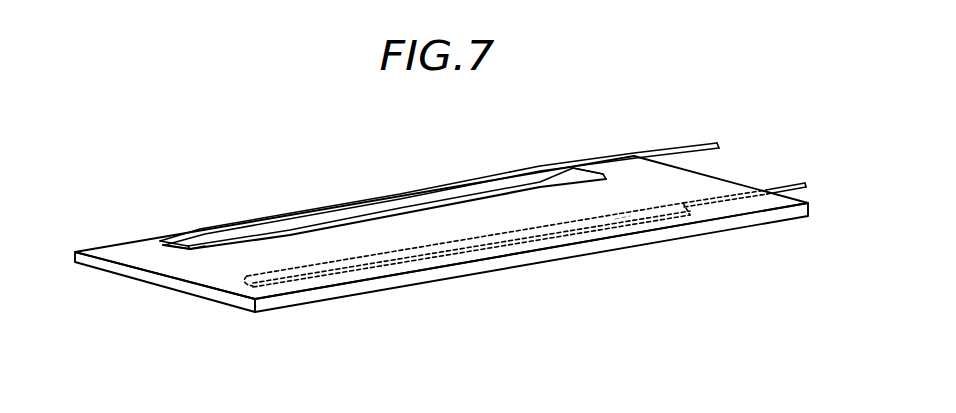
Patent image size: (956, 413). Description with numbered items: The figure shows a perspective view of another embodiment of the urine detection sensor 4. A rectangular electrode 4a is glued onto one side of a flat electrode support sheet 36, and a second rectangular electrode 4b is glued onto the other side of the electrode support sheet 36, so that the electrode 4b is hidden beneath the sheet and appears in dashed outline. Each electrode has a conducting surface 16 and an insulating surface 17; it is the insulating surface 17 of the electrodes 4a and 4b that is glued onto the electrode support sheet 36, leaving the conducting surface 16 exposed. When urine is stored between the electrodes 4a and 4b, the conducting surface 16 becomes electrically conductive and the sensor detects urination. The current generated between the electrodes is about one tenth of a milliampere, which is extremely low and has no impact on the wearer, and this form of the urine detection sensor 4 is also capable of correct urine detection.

The urine detection sensor 4 is at (562, 133).
The rectangular electrode 4a is at (257, 226).
The rectangular electrode 4b is at (430, 262).
The conducting surface 16 is at (485, 190).
The insulating surface 17 is at (622, 216).
The electrode support sheet 36 is at (240, 310).